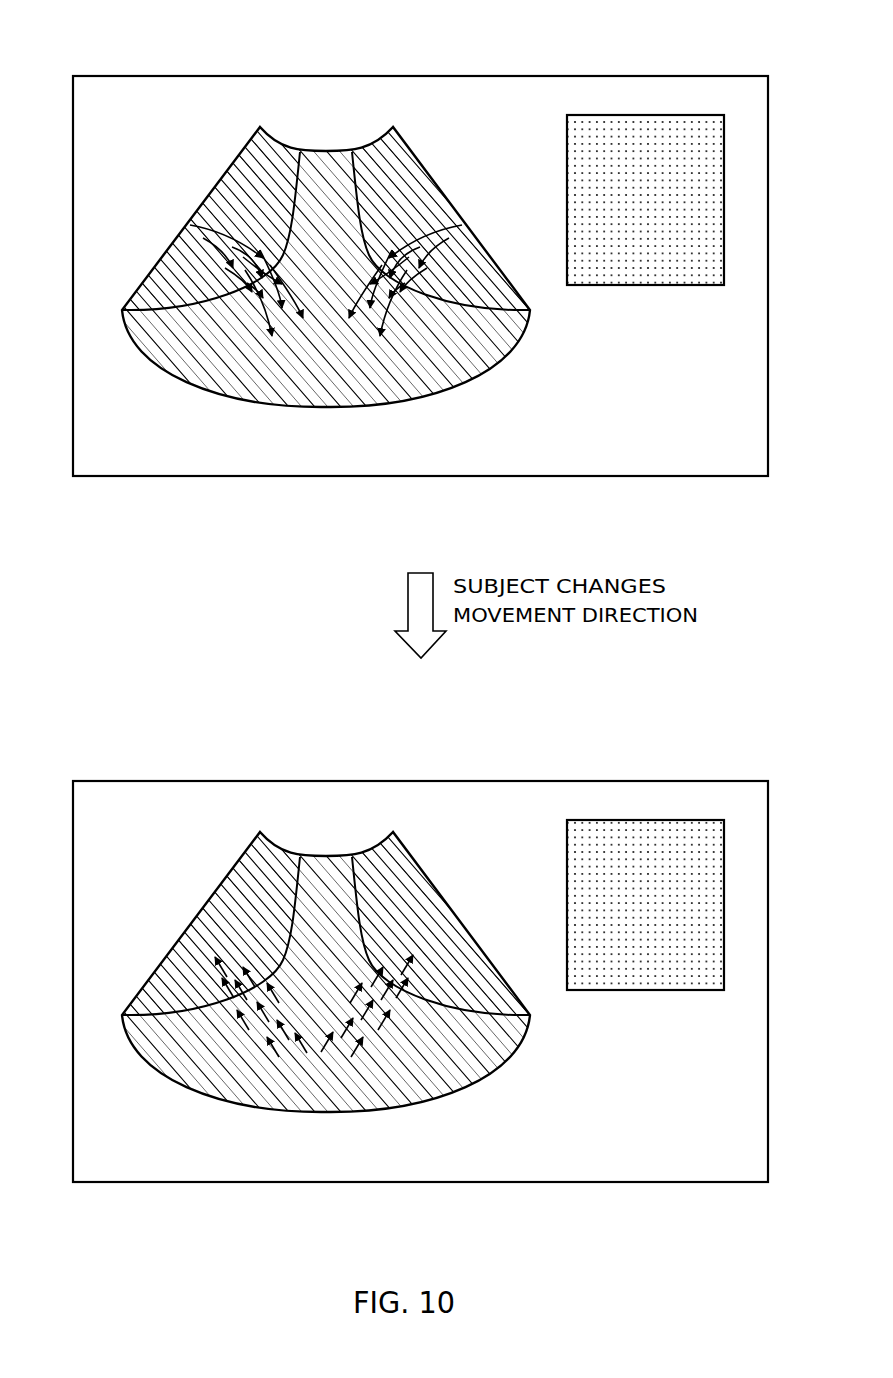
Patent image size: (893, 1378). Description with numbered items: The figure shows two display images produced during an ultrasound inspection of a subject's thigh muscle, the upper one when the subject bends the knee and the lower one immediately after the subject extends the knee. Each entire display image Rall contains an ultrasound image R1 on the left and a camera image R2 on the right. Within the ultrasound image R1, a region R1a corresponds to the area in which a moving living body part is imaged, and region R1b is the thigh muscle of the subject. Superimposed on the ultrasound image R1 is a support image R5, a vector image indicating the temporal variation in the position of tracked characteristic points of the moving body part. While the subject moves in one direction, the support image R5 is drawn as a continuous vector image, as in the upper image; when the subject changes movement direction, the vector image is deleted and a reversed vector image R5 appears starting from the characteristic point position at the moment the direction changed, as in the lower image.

The entire display image Rall is at (111, 69).
The ultrasound image R1 is at (327, 163).
The region of moving living body part R1a is at (404, 139).
The thigh muscle region R1b is at (404, 844).
The camera image R2 is at (642, 134).
The support image (vector image) R5 is at (267, 318).